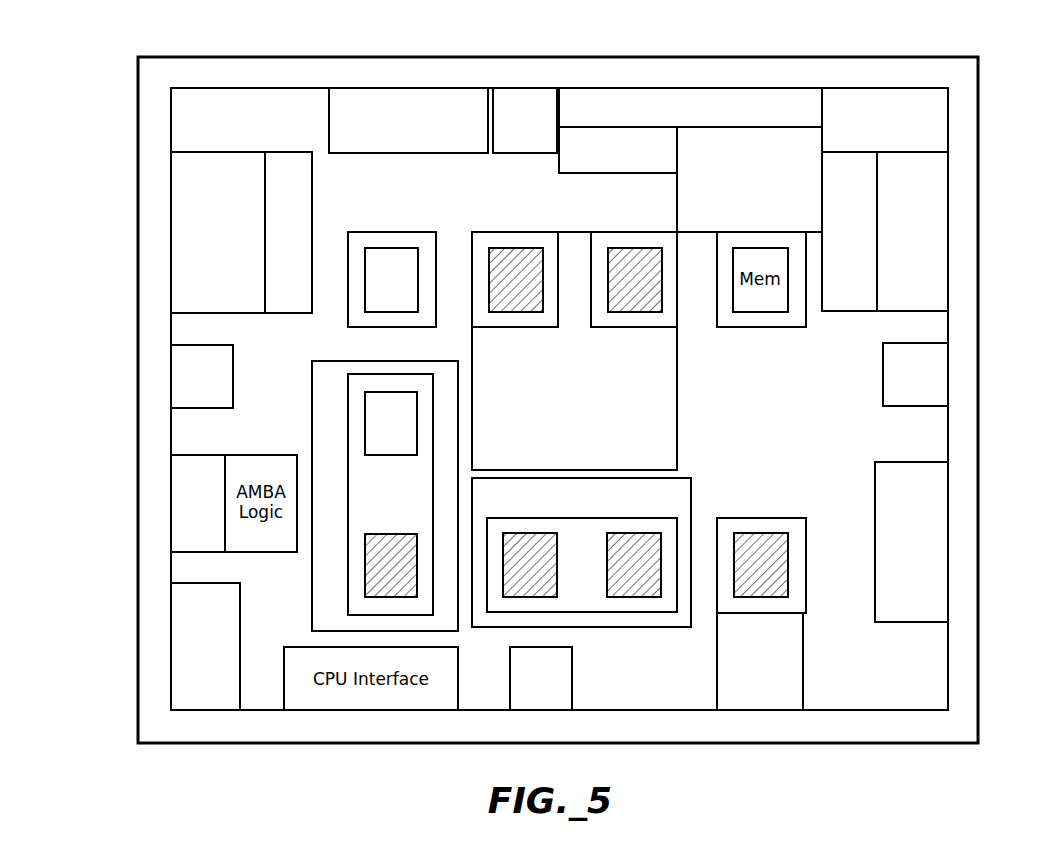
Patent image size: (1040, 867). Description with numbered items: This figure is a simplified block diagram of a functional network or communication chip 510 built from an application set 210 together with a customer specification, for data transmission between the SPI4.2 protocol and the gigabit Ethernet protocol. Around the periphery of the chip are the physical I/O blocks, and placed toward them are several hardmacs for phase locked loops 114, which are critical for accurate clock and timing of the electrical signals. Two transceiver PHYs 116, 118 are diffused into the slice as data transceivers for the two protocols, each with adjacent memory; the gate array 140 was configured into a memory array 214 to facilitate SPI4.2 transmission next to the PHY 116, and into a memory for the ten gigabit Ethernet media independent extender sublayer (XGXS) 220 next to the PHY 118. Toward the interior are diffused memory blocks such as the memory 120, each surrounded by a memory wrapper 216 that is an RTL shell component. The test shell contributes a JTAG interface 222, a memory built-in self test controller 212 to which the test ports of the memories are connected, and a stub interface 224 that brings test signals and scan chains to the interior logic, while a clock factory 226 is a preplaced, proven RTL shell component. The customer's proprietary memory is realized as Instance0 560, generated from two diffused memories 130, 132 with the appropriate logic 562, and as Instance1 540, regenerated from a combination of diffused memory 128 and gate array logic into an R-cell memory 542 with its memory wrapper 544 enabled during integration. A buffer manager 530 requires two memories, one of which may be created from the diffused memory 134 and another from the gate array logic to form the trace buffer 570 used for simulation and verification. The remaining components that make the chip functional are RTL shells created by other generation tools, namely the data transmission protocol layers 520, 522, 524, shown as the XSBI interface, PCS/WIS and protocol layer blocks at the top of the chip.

The phase locked loop 114 is at (529, 88).
The PHY 116 is at (175, 193).
The PHY 118 is at (943, 193).
The diffused memory block 120 is at (400, 257).
The diffused memory 128 is at (365, 580).
The diffused memory 130 is at (545, 590).
The diffused memory 132 is at (610, 590).
The diffused memory 134 is at (770, 540).
The gate array 140 is at (795, 432).
The application set 210 is at (383, 57).
The MBIST controller 212 is at (466, 88).
The SPI4.2 protocol layer memory 214 is at (258, 268).
The memory wrapper 216 is at (382, 250).
The XGXS protocol layer 220 is at (870, 262).
The JTAG interface 222 is at (175, 515).
The stub interface 224 is at (175, 650).
The clock factory 226 is at (940, 555).
The network or communication chip 510 is at (268, 38).
The data transmission protocol layer 520 is at (686, 88).
The data transmission protocol layer 522 is at (600, 127).
The data transmission protocol layer 524 is at (775, 130).
The buffer manager 530 is at (677, 400).
The proprietary memory Instance1 540 is at (312, 378).
The R-cell memory 542 is at (375, 395).
The memory wrapper 544 is at (348, 395).
The proprietary memory Instance0 560 is at (691, 490).
The logic 562 is at (677, 525).
The trace buffer 570 is at (803, 664).